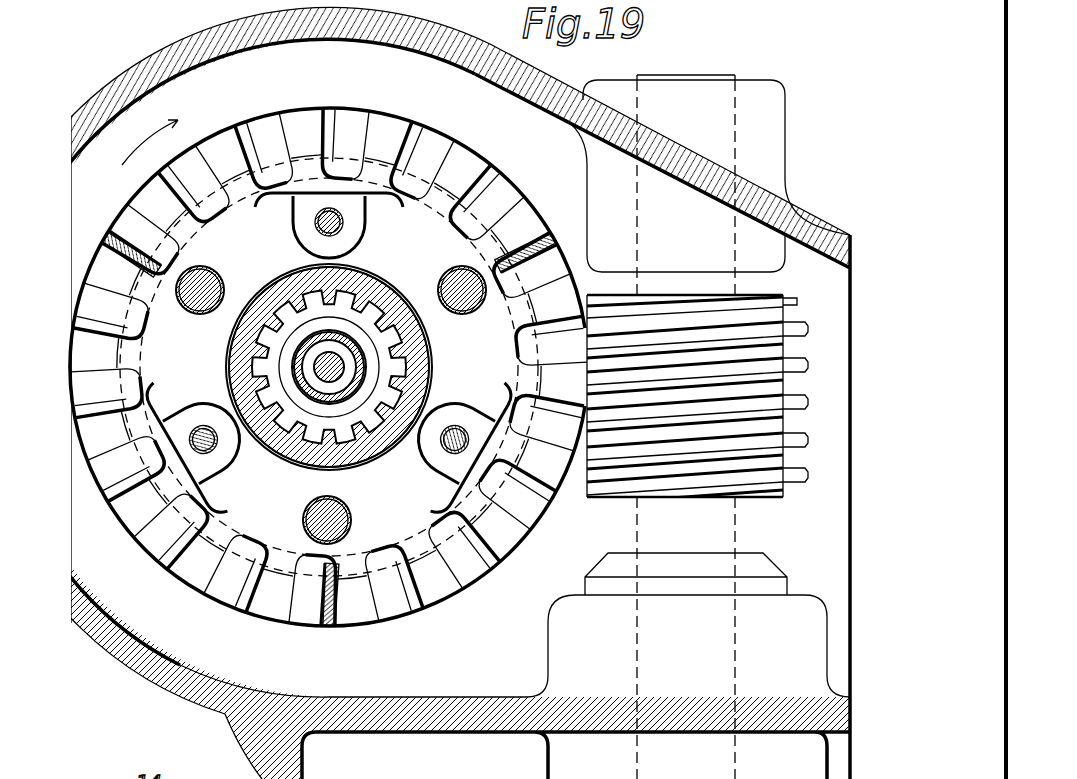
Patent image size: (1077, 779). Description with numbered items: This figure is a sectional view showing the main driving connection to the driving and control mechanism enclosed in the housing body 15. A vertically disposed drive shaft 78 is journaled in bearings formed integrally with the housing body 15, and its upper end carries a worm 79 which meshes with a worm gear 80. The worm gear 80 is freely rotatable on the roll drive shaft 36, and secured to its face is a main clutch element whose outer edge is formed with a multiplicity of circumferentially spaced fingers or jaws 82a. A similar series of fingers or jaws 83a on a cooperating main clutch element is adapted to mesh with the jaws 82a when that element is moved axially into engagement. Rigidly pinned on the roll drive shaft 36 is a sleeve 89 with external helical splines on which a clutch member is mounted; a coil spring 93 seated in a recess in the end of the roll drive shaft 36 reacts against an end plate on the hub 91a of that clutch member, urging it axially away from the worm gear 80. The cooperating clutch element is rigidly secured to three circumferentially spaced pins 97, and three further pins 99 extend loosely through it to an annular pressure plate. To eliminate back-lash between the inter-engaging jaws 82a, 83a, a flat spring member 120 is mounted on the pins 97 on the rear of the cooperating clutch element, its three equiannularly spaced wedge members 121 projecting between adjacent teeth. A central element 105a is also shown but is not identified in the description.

The housing body 15 is at (143, 686).
The roll drive shaft 36 is at (315, 330).
The drive shaft 78 is at (640, 523).
The worm 79 is at (765, 478).
The worm gear 80 is at (577, 305).
The fingers or jaws 82a is at (152, 540).
The fingers or jaws 83a is at (198, 577).
The sleeve 89 is at (329, 347).
The hub 91a is at (352, 277).
The coil spring 93 is at (366, 360).
The pins 97 is at (207, 420).
The pins 99 is at (305, 515).
The shaft 105a is at (335, 382).
The flat spring member 120 is at (278, 185).
The wedge members 121 is at (118, 248).